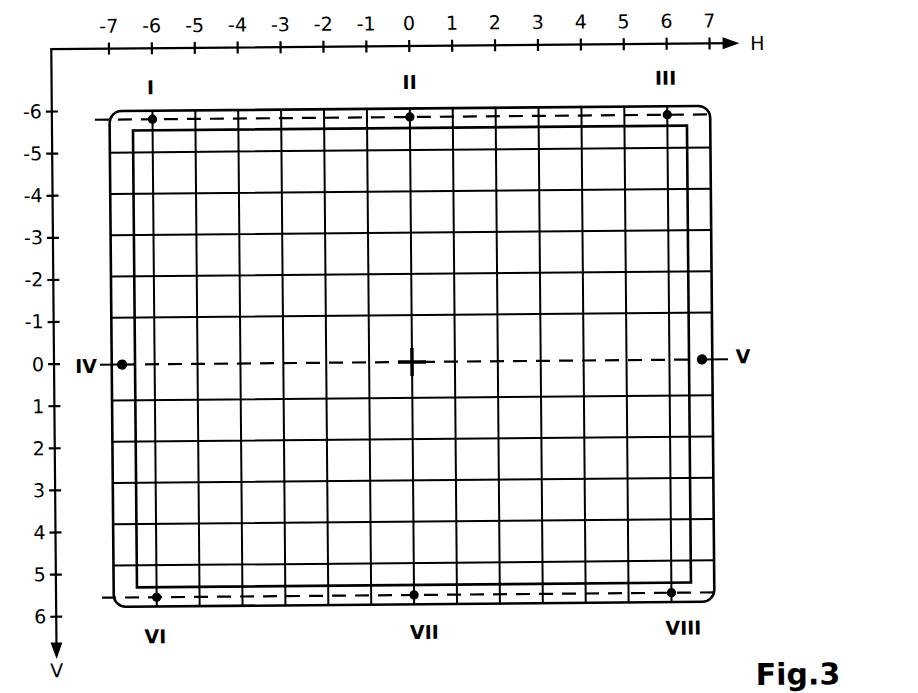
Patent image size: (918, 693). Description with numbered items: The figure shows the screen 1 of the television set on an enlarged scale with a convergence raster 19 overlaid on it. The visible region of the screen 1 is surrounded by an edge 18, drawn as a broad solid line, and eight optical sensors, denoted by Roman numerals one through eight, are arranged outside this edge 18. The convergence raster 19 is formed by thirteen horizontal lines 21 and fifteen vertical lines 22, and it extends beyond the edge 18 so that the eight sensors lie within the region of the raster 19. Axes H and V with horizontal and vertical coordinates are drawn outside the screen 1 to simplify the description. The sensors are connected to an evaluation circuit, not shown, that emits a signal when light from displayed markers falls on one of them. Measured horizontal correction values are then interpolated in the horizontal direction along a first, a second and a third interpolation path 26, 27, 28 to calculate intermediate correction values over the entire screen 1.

The screen 1 is at (746, 157).
The edge 18 is at (690, 212).
The convergence raster 19 is at (458, 356).
The horizontal lines 21 is at (178, 282).
The vertical lines 22 is at (153, 184).
The first interpolation path 26 is at (712, 112).
The second interpolation path 27 is at (717, 369).
The third interpolation path 28 is at (712, 595).